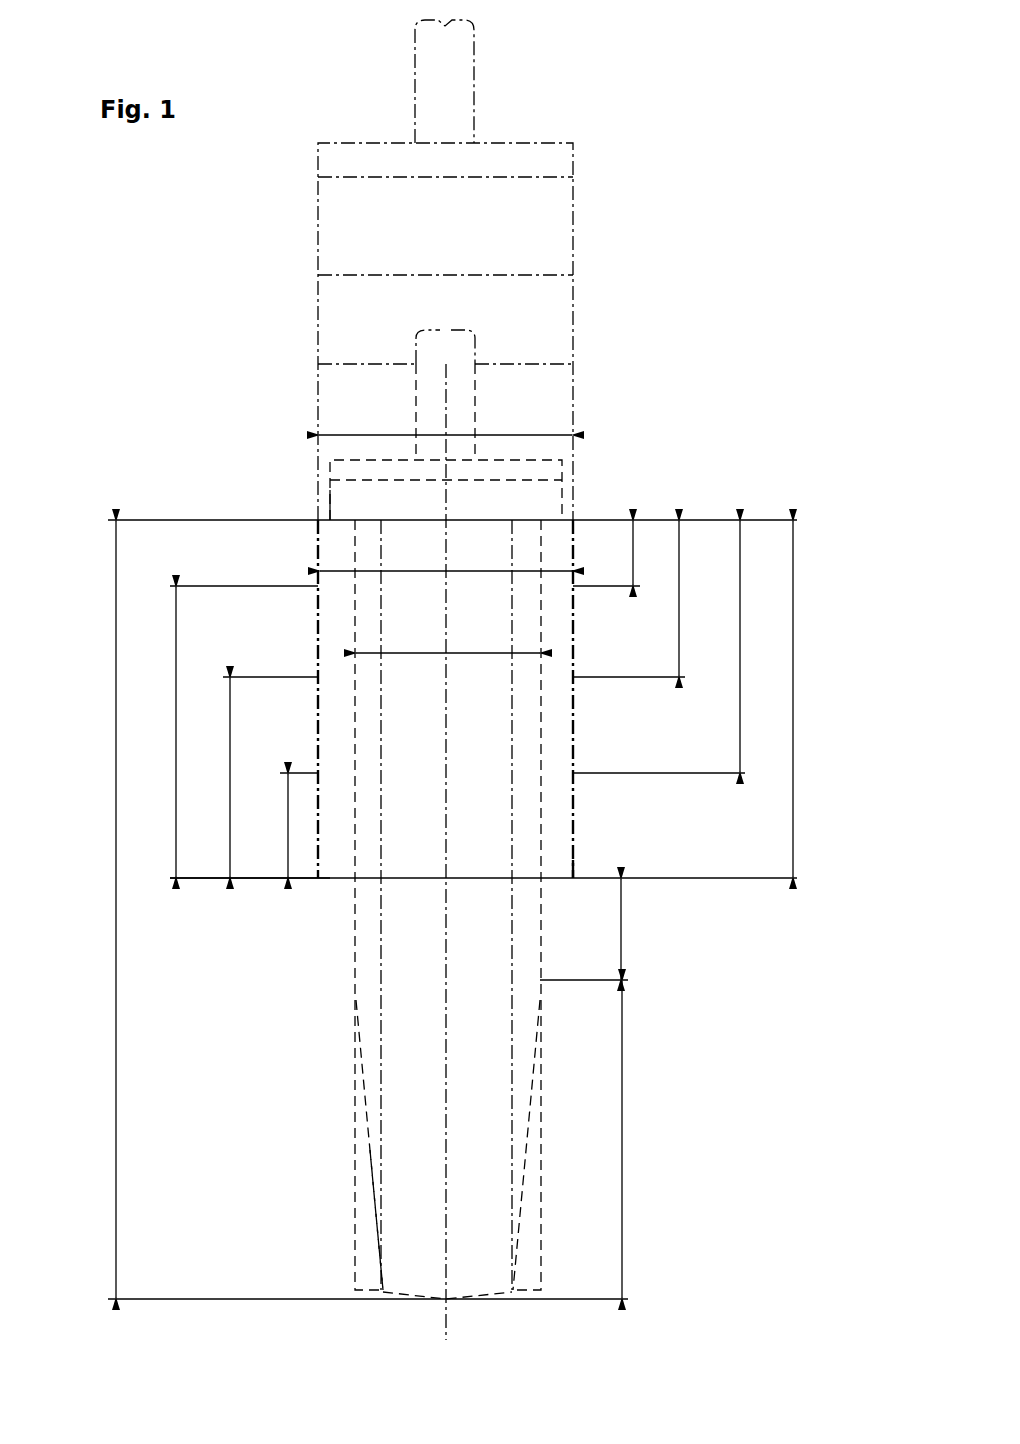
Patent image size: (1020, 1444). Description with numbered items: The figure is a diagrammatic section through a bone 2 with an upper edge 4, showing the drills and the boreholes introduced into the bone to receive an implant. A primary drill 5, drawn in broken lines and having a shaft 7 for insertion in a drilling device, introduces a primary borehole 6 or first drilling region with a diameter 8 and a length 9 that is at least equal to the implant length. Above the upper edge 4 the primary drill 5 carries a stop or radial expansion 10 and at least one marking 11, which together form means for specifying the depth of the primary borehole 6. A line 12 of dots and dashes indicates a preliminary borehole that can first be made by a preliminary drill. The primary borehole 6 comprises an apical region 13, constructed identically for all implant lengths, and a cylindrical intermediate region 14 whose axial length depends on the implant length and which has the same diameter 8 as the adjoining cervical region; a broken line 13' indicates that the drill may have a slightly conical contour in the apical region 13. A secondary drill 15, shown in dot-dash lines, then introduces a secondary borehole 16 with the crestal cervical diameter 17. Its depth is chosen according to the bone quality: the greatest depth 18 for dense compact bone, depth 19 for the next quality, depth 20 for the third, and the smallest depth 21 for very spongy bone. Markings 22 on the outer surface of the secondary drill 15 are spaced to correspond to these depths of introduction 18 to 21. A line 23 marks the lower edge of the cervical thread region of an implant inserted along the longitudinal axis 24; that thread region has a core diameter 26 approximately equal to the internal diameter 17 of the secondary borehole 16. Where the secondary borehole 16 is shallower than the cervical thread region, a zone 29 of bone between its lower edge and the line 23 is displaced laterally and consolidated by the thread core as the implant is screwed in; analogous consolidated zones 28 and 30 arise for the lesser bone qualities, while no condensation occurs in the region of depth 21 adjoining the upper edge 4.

The bone 2 is at (682, 1185).
The upper edge 4 is at (183, 520).
The primary drill 5 is at (327, 498).
The primary borehole 6 is at (352, 940).
The connecting pin 7 is at (416, 395).
The diameter 8 is at (413, 653).
The length 9 is at (116, 932).
The radial expansion 10 is at (347, 497).
The marking 11 is at (362, 483).
The line of dots and dashes 12 is at (380, 1035).
The apical region 13 is at (368, 1140).
The broken line 13' is at (334, 1220).
The intermediate region 14 is at (621, 930).
The secondary drill 15 is at (318, 222).
The secondary borehole 16 is at (573, 830).
The crestal cervical diameter 17 is at (421, 571).
The depth 18 is at (793, 700).
The depth 19 is at (740, 645).
The depth 20 is at (679, 600).
The depth 21 is at (633, 555).
The markings 22 is at (533, 364).
The line 23 is at (212, 880).
The longitudinal axis 24 is at (447, 1337).
The core diameter 26 is at (510, 435).
The zone 28 is at (288, 825).
The zone 29 is at (230, 780).
The zone 30 is at (176, 730).